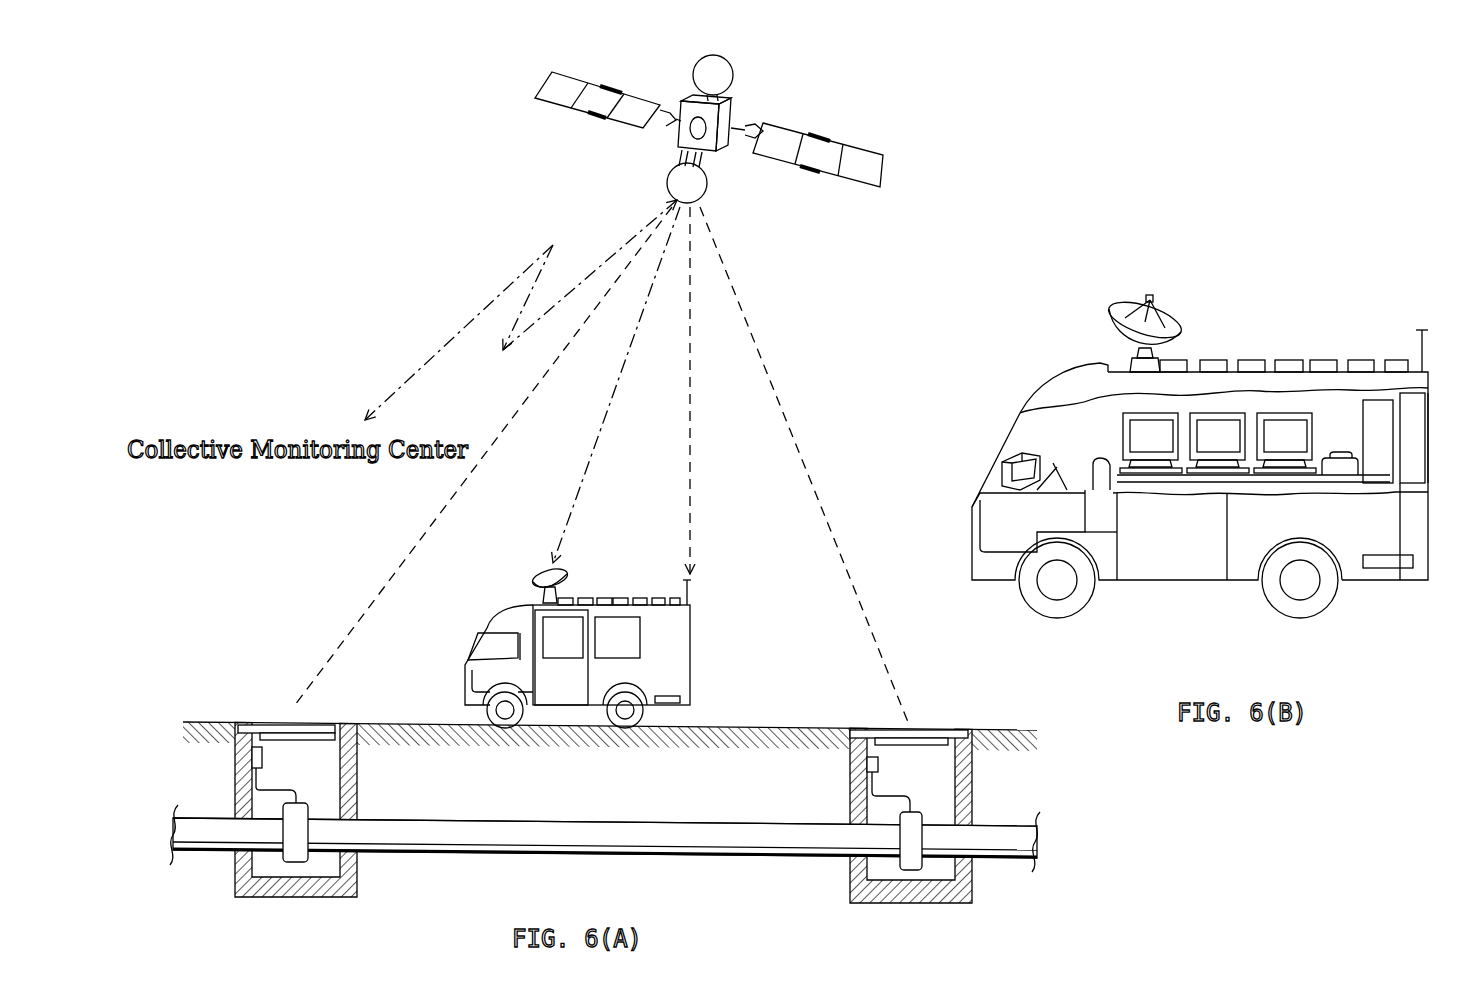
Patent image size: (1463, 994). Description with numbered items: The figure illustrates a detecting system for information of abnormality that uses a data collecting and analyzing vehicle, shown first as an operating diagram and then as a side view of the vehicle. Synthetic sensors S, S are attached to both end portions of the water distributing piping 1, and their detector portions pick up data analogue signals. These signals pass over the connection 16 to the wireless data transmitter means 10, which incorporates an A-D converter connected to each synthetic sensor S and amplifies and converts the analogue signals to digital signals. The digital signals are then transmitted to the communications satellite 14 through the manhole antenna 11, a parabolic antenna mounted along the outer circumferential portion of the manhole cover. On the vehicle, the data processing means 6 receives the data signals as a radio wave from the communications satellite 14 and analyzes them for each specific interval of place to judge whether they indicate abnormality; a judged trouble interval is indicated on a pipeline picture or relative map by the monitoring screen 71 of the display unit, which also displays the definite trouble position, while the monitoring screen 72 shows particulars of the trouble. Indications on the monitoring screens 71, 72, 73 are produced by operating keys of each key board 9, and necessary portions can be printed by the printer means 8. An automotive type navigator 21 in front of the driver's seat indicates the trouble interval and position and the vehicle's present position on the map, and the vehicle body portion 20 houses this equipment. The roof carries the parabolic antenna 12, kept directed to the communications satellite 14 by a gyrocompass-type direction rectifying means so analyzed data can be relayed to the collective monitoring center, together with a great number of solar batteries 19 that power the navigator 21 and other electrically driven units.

The water distributing piping 1 is at (183, 820).
The wireless data transmitter means 10 is at (263, 757).
The manhole antenna 11 is at (268, 722).
The parabolic antenna 12 is at (1125, 312).
The communications satellite 14 is at (749, 105).
The cable 16 is at (260, 802).
The solar batteries 19 is at (1395, 362).
The vehicle body 20 is at (1413, 475).
The automotive type navigator 21 is at (1023, 446).
The data processing means 6 is at (1387, 448).
The monitoring screen 71 is at (1160, 428).
The monitoring screen 72 is at (1223, 428).
The monitoring screen 73 is at (1288, 428).
The printer means 8 is at (1340, 455).
The key board 9 is at (1283, 475).
The synthetic sensor S is at (320, 802).